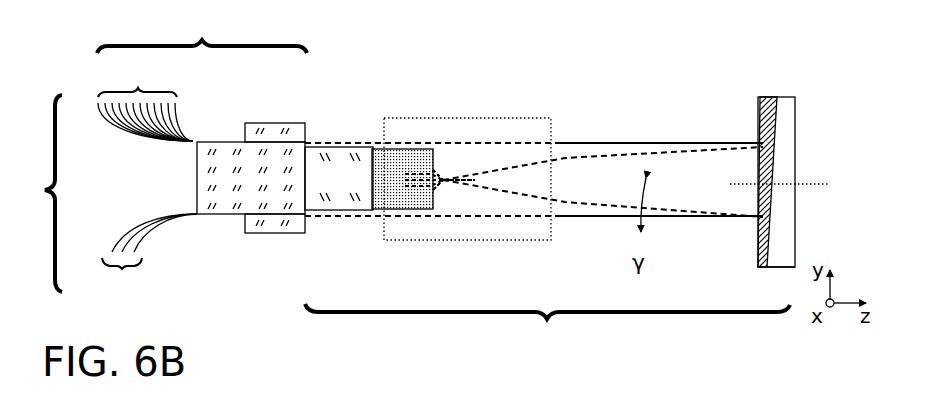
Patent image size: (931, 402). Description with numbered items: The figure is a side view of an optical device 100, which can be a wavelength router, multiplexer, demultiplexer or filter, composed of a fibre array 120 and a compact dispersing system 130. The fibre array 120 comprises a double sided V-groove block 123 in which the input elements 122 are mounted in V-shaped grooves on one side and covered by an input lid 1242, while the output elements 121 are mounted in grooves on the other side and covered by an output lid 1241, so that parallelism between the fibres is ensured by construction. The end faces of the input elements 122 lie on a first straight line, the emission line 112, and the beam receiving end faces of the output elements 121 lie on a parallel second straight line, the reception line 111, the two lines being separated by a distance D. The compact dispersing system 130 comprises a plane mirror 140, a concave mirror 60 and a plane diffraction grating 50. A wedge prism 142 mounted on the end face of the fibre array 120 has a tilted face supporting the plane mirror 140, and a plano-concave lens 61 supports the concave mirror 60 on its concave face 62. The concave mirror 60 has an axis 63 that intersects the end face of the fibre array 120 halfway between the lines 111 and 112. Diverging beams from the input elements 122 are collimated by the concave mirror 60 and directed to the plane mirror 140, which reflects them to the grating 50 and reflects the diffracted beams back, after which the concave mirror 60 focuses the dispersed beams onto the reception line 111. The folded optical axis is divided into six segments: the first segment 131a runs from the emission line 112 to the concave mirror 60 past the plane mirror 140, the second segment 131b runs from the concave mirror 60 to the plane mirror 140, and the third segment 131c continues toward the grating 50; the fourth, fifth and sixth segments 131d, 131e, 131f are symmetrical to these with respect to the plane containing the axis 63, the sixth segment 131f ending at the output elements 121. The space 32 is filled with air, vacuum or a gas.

The optical device 100 is at (31, 193).
The fibre array 120 is at (202, 34).
The output elements 121 is at (145, 101).
The input elements 122 is at (149, 258).
The double sided V-groove block 123 is at (222, 212).
The output lid 1241 is at (277, 128).
The input lid 1242 is at (273, 230).
The reception line 111 is at (313, 140).
The emission line 112 is at (314, 218).
The wedge prism 142 is at (362, 157).
The plane mirror 140 is at (400, 200).
The plane diffraction grating 50 is at (533, 230).
The compact dispersing system 130 is at (547, 329).
The first segment of the optical axis 131a is at (630, 218).
The second segment of the optical axis 131b is at (663, 210).
The third segment of the optical axis 131c is at (443, 180).
The fourth segment of the optical axis 131d is at (443, 180).
The fifth segment of the optical axis 131e is at (663, 154).
The sixth segment of the optical axis 131f is at (630, 143).
The space 32 is at (670, 120).
The plano-concave lens 61 is at (781, 110).
The concave mirror 60 is at (762, 217).
The concave face 62 is at (765, 266).
The axis of the concave mirror 63 is at (813, 184).